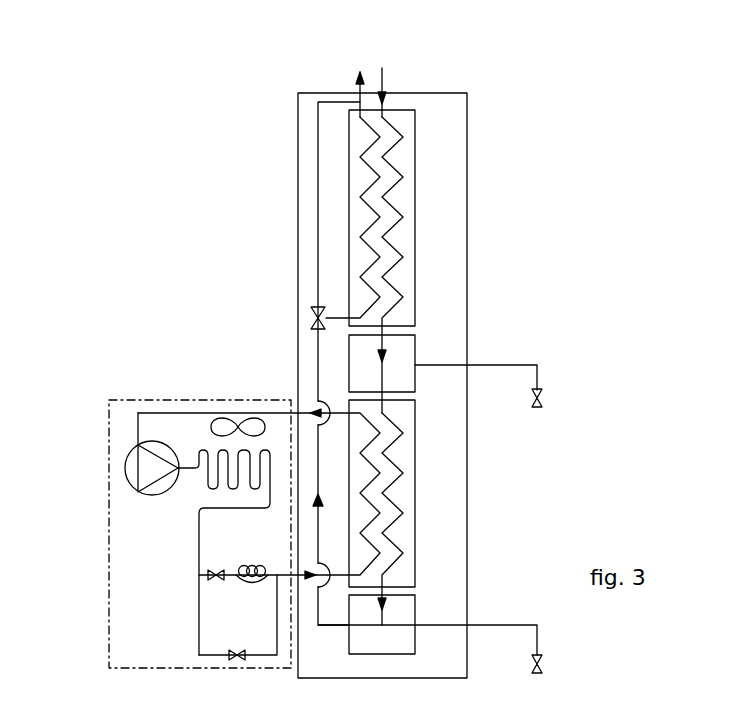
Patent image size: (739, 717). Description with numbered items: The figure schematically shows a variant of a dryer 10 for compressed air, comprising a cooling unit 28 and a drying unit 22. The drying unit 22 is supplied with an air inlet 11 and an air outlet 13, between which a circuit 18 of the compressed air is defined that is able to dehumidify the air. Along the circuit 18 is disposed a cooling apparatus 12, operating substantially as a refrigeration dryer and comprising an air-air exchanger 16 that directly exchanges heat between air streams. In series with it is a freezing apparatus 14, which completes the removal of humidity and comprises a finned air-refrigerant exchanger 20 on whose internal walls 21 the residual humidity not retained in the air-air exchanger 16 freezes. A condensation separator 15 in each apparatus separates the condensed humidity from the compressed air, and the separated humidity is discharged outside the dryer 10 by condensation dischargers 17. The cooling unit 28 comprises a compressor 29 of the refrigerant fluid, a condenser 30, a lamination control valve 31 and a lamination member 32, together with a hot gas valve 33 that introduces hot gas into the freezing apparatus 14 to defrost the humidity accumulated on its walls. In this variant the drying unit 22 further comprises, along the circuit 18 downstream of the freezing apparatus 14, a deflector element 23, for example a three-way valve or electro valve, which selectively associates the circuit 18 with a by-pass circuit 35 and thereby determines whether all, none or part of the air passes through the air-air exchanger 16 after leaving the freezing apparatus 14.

The dryer 10 is at (596, 250).
The air inlet 11 is at (384, 98).
The cooling apparatus 12 is at (432, 228).
The air outlet 13 is at (358, 92).
The freezing apparatus 14 is at (430, 478).
The condensation separator 15 is at (417, 352).
The air-air exchanger 16 is at (417, 181).
The condensation discharger 17 is at (542, 399).
The circuit 18 is at (333, 627).
The air-refrigerant exchanger 20 is at (417, 530).
The internal walls 21 is at (417, 453).
The drying unit 22 is at (468, 140).
The deflector element 23 is at (311, 322).
The cooling unit 28 is at (109, 512).
The compressor 29 is at (127, 461).
The condenser 30 is at (205, 448).
The lamination control valve 31 is at (216, 568).
The lamination member 32 is at (253, 565).
The hot gas valve 33 is at (237, 661).
The by-pass circuit 35 is at (316, 213).